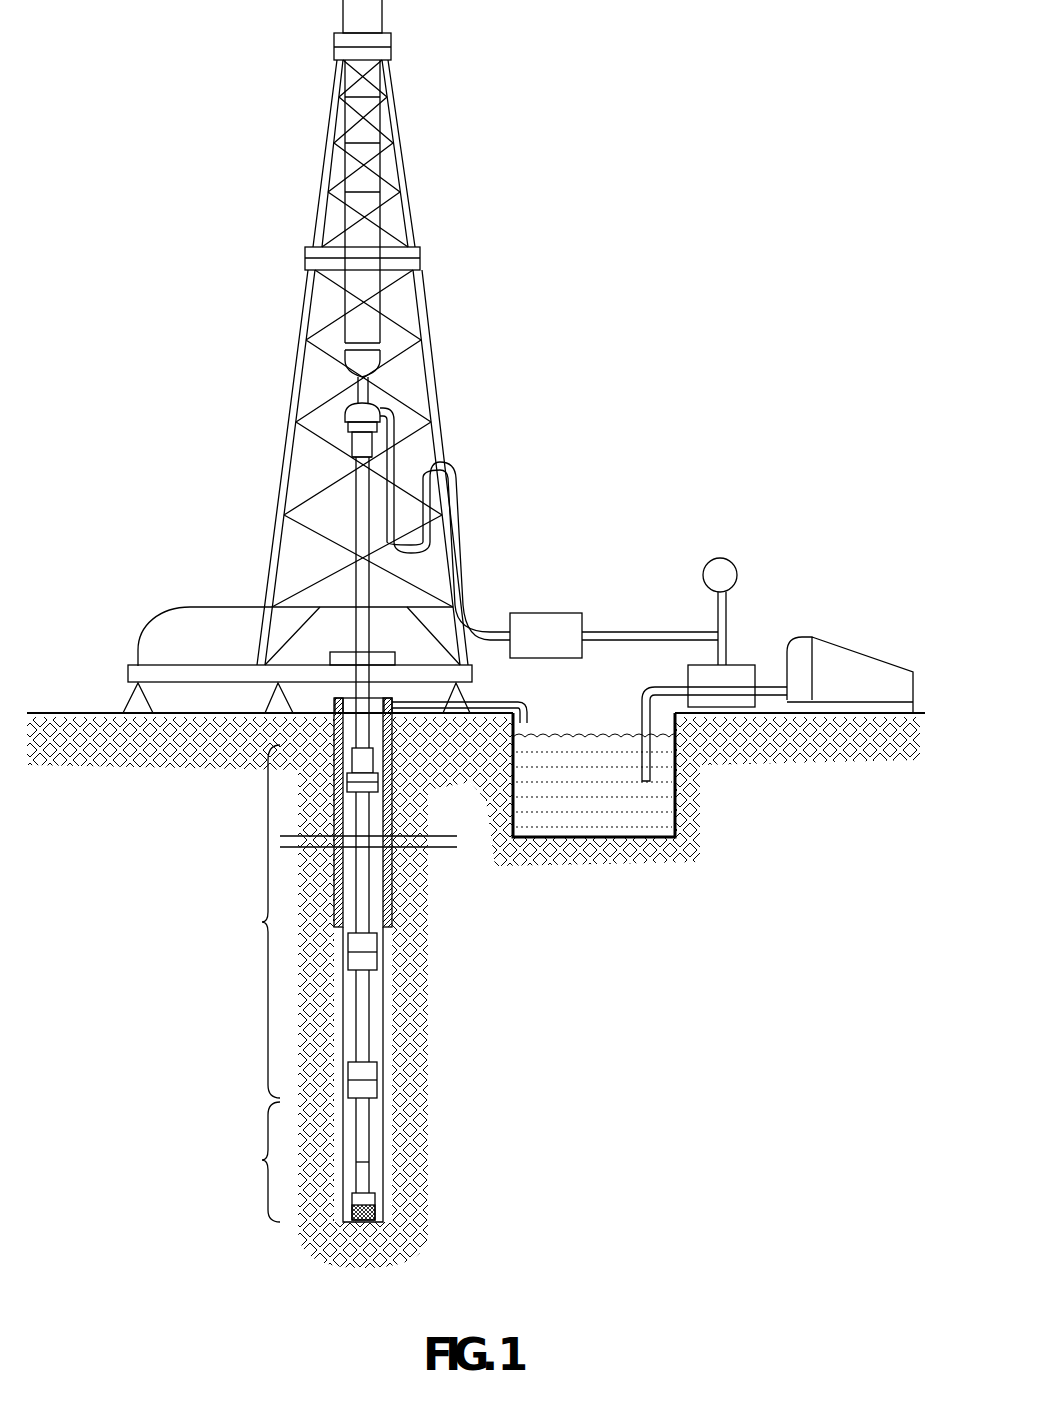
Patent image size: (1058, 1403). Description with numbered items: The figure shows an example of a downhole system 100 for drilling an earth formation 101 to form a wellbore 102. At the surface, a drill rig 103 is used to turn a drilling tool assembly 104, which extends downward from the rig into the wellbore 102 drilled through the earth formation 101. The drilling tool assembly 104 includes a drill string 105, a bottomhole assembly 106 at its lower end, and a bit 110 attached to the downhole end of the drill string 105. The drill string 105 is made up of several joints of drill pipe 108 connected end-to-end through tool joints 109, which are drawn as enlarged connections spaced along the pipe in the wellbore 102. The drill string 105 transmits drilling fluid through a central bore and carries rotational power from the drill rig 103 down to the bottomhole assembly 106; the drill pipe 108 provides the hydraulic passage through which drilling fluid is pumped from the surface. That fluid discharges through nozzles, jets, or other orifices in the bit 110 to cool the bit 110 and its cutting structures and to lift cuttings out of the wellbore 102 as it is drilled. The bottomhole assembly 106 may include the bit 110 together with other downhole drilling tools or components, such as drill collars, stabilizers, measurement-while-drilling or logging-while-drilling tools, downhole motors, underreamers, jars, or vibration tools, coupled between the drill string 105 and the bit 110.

The downhole system 100 is at (836, 50).
The earth formation 101 is at (476, 990).
The wellbore 102 is at (385, 1057).
The drill rig 103 is at (292, 372).
The drilling tool assembly 104 is at (405, 908).
The drill string 105 is at (337, 921).
The bottomhole assembly 106 is at (249, 1162).
The drill pipe 108 is at (372, 1018).
The tool joints 109 is at (373, 963).
The bit 110 is at (380, 1207).